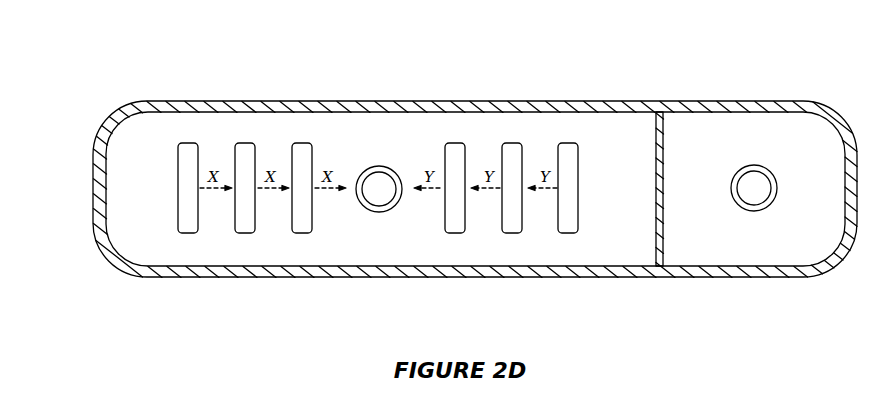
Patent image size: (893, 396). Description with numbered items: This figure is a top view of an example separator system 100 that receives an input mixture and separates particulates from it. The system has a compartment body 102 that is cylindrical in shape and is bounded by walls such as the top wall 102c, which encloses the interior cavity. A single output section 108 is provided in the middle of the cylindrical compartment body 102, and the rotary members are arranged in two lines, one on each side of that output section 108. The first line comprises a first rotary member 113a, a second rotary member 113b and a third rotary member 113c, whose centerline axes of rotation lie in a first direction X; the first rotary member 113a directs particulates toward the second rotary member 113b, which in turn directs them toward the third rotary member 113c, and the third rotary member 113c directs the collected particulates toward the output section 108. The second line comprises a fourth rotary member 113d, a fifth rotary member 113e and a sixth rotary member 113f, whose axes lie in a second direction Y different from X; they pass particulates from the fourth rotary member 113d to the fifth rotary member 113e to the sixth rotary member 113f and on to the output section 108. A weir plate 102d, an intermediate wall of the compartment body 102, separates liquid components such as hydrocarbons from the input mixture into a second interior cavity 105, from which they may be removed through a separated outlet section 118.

The separator system 100 is at (781, 52).
The compartment body 102 is at (187, 101).
The top wall 102c is at (390, 110).
The weir plate 102d is at (648, 120).
The interior cavity 105 is at (736, 161).
The output section 108 is at (364, 236).
The separated outlet section 118 is at (753, 212).
The first rotary member 113a is at (190, 233).
The second rotary member 113b is at (247, 233).
The third rotary member 113c is at (301, 233).
The fourth rotary member 113d is at (455, 233).
The fifth rotary member 113e is at (508, 142).
The sixth rotary member 113f is at (567, 233).